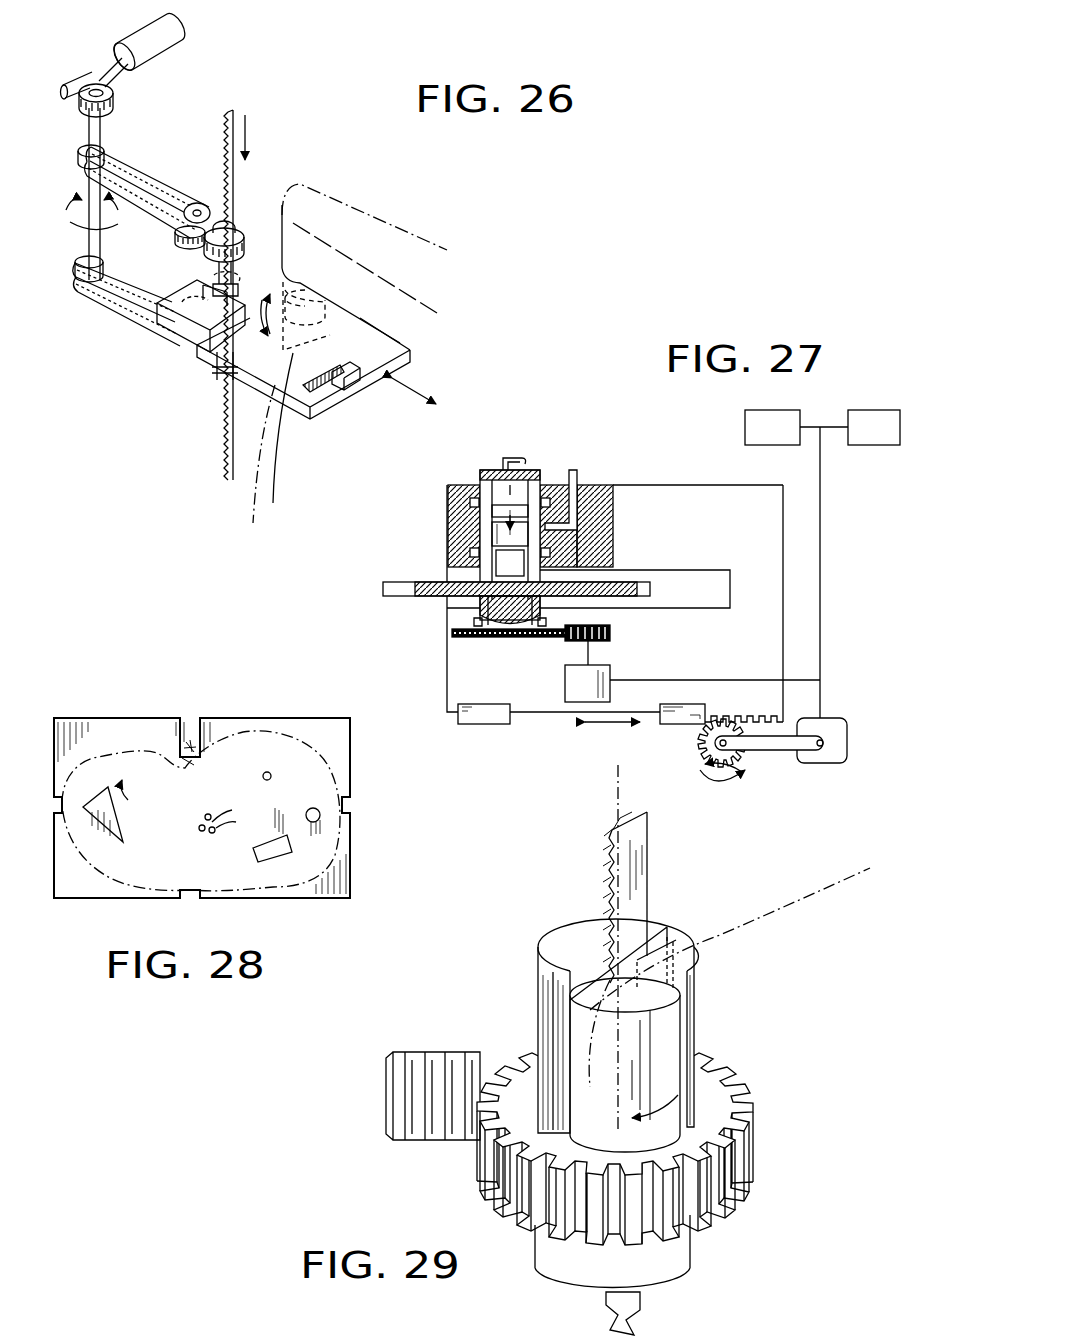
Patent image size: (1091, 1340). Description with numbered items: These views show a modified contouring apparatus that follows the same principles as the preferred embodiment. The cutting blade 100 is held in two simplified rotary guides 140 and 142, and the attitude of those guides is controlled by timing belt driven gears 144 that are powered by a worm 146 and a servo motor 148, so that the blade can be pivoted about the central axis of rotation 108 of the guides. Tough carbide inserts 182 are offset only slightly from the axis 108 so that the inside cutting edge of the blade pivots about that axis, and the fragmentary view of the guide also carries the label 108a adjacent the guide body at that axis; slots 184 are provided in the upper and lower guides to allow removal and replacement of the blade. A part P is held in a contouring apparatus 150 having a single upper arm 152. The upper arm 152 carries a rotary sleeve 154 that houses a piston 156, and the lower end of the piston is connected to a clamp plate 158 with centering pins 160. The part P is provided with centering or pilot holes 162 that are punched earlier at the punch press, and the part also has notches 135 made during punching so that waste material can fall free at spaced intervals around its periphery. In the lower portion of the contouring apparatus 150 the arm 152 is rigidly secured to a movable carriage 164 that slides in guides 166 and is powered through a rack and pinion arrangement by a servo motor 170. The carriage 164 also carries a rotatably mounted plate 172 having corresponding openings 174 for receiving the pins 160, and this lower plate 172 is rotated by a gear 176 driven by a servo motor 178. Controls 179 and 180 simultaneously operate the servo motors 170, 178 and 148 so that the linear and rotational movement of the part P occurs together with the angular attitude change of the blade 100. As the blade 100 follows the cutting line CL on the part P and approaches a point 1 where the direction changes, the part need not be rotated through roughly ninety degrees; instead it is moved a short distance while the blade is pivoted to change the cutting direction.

In FIG. 26, the cutting blade 100 is at (235, 185).
In FIG. 29, the cutting blade 100 is at (650, 868).
In FIG. 28, the central axis of rotation 108 is at (186, 763).
In FIG. 29, the central axis of rotation 108 is at (612, 800).
In FIG. 29, the rotatable insert 108a is at (625, 1065).
In FIG. 28, the notches 135 is at (348, 805).
In FIG. 26, the rotary guide 140 is at (232, 228).
In FIG. 26, the rotary guide 142 is at (205, 365).
In FIG. 26, the timing belt driven gears 144 is at (188, 286).
In FIG. 26, the worm 146 is at (78, 80).
In FIG. 26, the servo motor 148 is at (155, 62).
In FIG. 27, the contouring apparatus 150 is at (738, 487).
In FIG. 26, the upper arm 152 is at (428, 234).
In FIG. 27, the upper arm 152 is at (620, 486).
In FIG. 27, the rotary sleeve 154 is at (550, 488).
In FIG. 27, the piston 156 is at (500, 488).
In FIG. 27, the clamp plate 158 is at (468, 566).
In FIG. 27, the centering pins 160 is at (588, 591).
In FIG. 28, the centering or pilot holes 162 is at (259, 817).
In FIG. 27, the movable carriage 164 is at (447, 693).
In FIG. 27, the guides 166 is at (478, 724).
In FIG. 27, the servo motor 170 is at (838, 718).
In FIG. 27, the rotatably mounted plate 172 is at (470, 627).
In FIG. 27, the openings 174 is at (470, 597).
In FIG. 27, the gear 176 is at (612, 636).
In FIG. 27, the servo motor 178 is at (565, 686).
In FIG. 27, the control 179 is at (745, 428).
In FIG. 27, the control 180 is at (870, 445).
In FIG. 29, the carbide inserts 182 is at (676, 934).
In FIG. 29, the slots 184 is at (548, 1016).
In FIG. 28, the point 1 is at (114, 811).
In FIG. 26, the part P is at (318, 400).
In FIG. 27, the part P is at (383, 590).
In FIG. 28, the part P is at (232, 718).
In FIG. 28, the cutting line CL is at (348, 778).
In FIG. 29, the cutting line CL is at (790, 900).